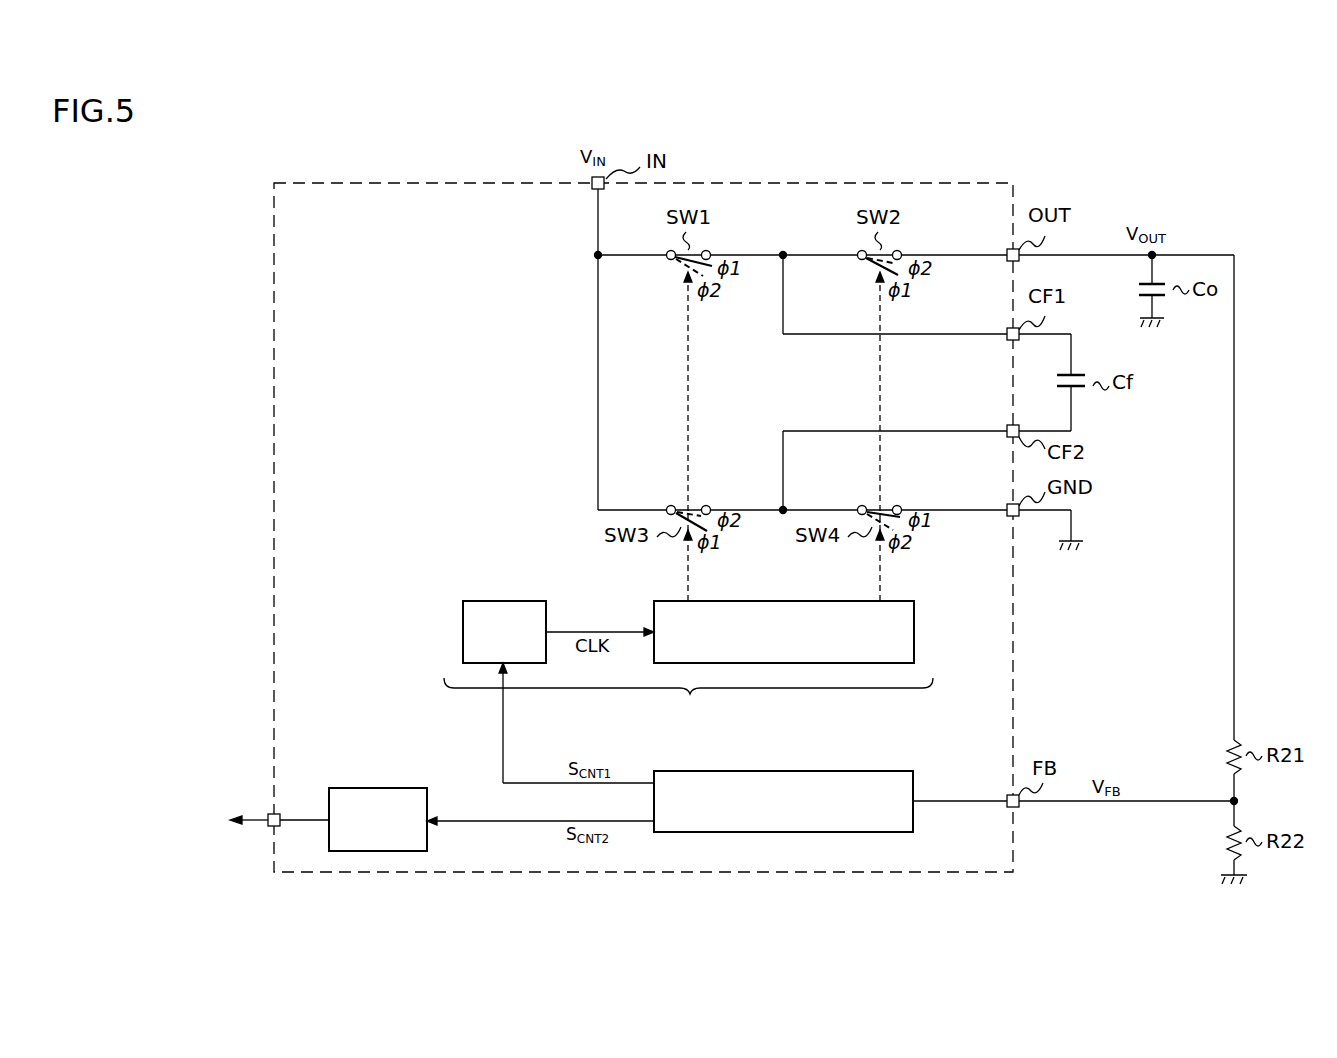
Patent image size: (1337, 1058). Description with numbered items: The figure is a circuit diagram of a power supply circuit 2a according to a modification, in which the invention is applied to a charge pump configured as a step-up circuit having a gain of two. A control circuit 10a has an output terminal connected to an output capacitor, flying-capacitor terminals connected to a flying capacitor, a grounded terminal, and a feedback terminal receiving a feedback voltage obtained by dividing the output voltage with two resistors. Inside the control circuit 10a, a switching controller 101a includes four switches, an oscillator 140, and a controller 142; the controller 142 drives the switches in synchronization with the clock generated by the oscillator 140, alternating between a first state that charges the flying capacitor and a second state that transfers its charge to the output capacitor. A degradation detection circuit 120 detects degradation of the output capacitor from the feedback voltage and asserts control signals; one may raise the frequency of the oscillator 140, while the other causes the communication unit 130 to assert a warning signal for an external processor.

The control circuit 10a is at (612, 875).
The power supply circuit 2a is at (1138, 127).
The oscillator 140 is at (507, 601).
The controller 142 is at (914, 628).
The switching controller 101a is at (688, 701).
The degradation detection circuit 120 is at (856, 771).
The communication unit 130 is at (370, 788).